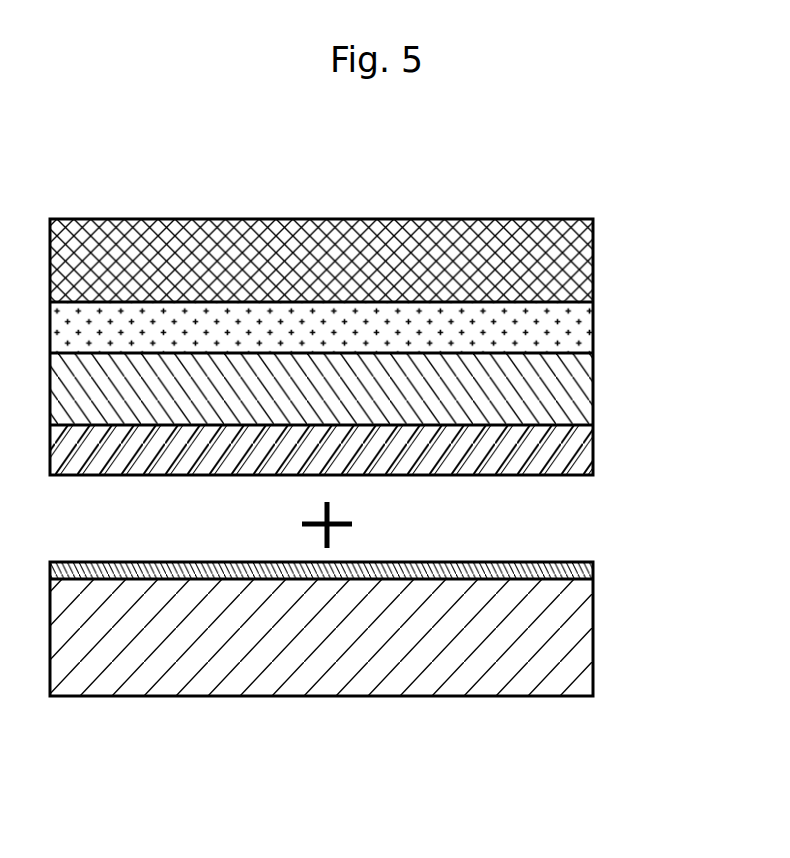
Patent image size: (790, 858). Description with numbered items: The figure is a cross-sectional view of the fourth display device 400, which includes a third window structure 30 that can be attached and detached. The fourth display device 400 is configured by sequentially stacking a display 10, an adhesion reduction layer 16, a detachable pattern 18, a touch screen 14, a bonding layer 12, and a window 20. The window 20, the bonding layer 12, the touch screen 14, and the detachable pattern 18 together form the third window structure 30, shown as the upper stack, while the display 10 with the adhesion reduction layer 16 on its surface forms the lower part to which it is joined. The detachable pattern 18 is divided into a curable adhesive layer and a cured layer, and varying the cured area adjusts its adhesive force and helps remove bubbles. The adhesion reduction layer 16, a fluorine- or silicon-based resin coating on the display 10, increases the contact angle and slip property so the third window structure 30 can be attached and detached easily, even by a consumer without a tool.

The fourth display device 400 is at (73, 155).
The third window structure 30 is at (380, 347).
The window 20 is at (594, 262).
The bonding layer 12 is at (594, 331).
The touch screen 14 is at (594, 393).
The detachable pattern 18 is at (351, 450).
The adhesion reduction layer 16 is at (594, 572).
The display 10 is at (584, 639).